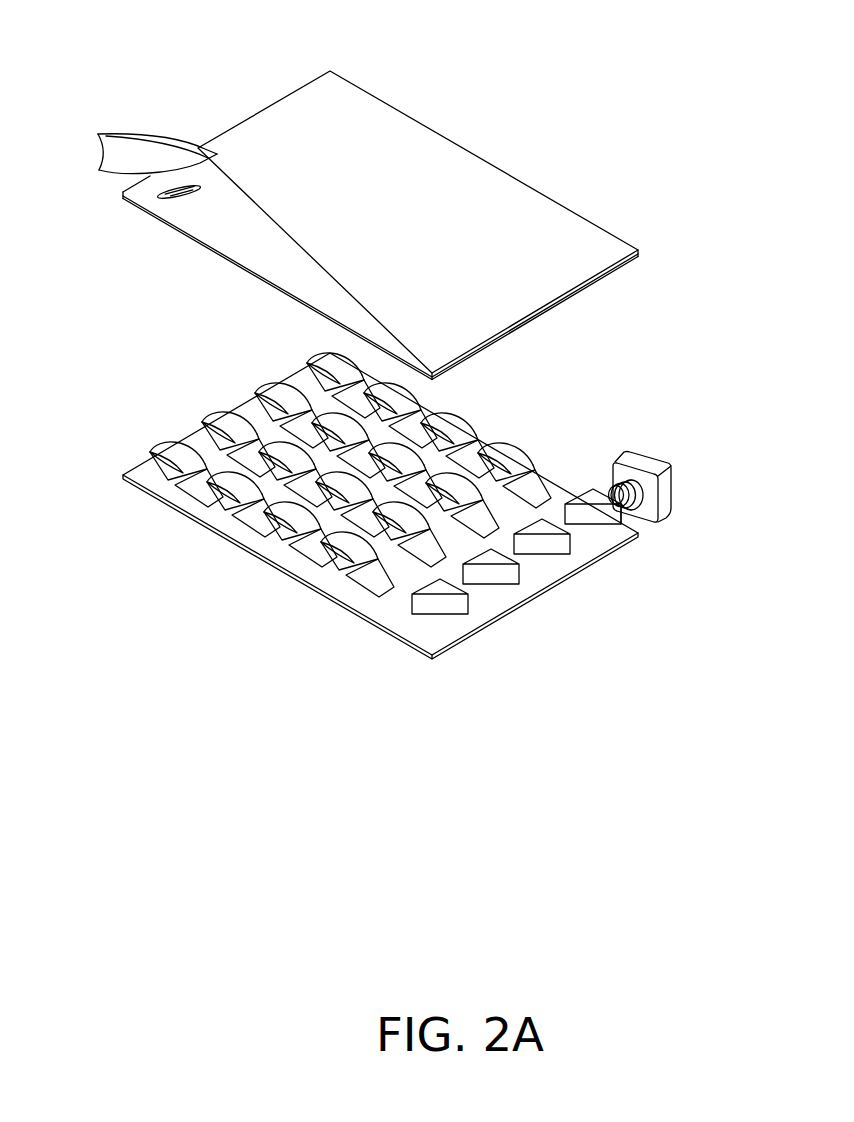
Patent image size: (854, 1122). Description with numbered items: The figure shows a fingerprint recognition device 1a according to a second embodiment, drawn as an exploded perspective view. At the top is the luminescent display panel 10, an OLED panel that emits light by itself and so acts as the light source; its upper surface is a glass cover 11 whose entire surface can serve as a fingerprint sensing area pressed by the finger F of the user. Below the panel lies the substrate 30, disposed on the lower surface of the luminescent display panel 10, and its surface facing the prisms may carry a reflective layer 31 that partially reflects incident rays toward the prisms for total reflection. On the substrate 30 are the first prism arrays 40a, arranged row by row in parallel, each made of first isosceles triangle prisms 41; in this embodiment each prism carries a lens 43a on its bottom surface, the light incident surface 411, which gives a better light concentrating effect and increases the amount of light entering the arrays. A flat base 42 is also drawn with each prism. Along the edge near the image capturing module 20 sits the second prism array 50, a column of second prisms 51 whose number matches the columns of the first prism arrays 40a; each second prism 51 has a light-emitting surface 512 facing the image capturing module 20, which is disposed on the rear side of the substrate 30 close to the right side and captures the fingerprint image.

The fingerprint recognition device 1a is at (201, 46).
The finger F is at (122, 145).
The luminescent display panel 10 is at (587, 286).
The cover 11 is at (418, 130).
The substrate 30 is at (493, 604).
The reflective layer 31 is at (352, 608).
The first prism arrays 40a is at (301, 354).
The first isosceles triangle prism 41 is at (125, 478).
The light incident surface 411 is at (152, 453).
The flat base portion 42 is at (190, 486).
The lens 43a is at (166, 449).
The second prism array 50 is at (428, 617).
The second prism 51 is at (597, 494).
The light-emitting surface 512 is at (621, 518).
The image capturing module 20 is at (636, 464).